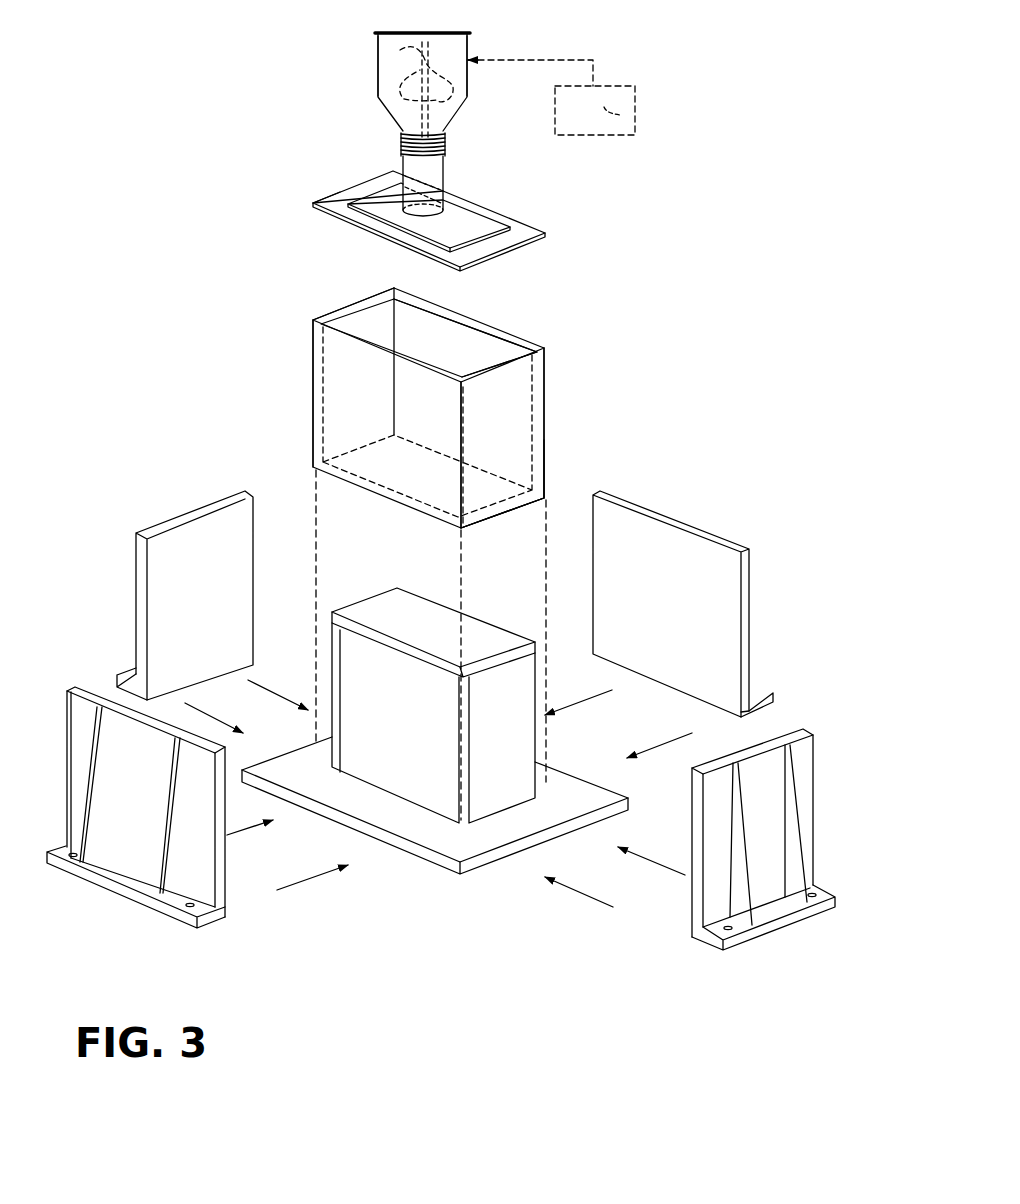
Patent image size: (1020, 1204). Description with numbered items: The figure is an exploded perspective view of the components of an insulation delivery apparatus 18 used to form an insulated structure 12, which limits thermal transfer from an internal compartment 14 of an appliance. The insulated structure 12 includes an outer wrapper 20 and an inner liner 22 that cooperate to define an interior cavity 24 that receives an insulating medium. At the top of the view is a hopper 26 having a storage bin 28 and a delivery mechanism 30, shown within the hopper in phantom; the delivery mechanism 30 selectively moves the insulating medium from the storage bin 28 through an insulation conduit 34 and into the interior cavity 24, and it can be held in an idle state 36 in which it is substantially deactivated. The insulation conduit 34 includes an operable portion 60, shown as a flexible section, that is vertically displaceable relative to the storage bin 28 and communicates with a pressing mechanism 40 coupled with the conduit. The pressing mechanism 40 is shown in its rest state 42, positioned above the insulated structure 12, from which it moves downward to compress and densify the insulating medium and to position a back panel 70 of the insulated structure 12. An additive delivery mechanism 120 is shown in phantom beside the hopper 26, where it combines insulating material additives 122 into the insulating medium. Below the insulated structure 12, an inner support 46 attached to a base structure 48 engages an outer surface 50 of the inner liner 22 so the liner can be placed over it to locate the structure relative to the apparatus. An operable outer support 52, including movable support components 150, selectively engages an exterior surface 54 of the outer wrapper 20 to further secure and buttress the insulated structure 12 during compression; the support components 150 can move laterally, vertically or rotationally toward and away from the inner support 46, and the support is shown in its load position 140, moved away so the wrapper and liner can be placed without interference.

The insulated structure 12 is at (433, 400).
The internal compartment 14 is at (360, 386).
The insulation delivery apparatus 18 is at (342, 80).
The outer wrapper 20 is at (549, 432).
The inner liner 22 is at (366, 324).
The interior cavity 24 is at (494, 332).
The hopper 26 is at (376, 57).
The storage bin 28 is at (458, 52).
The delivery mechanism 30 is at (406, 70).
The insulation conduit 34 is at (449, 176).
The idle state 36 is at (375, 32).
The pressing mechanism 40 is at (487, 238).
The rest state 42 is at (515, 211).
The inner support 46 is at (414, 777).
The base structure 48 is at (512, 856).
The outer surface 50 is at (443, 355).
The operable outer support 52 is at (61, 726).
The exterior surface 54 is at (541, 469).
The operable portion 60 is at (397, 138).
The back panel 70 is at (317, 202).
The additive delivery mechanism 120 is at (623, 84).
The insulating material additives 122 is at (610, 111).
The load position 140 is at (763, 602).
The support components 150 is at (179, 596).